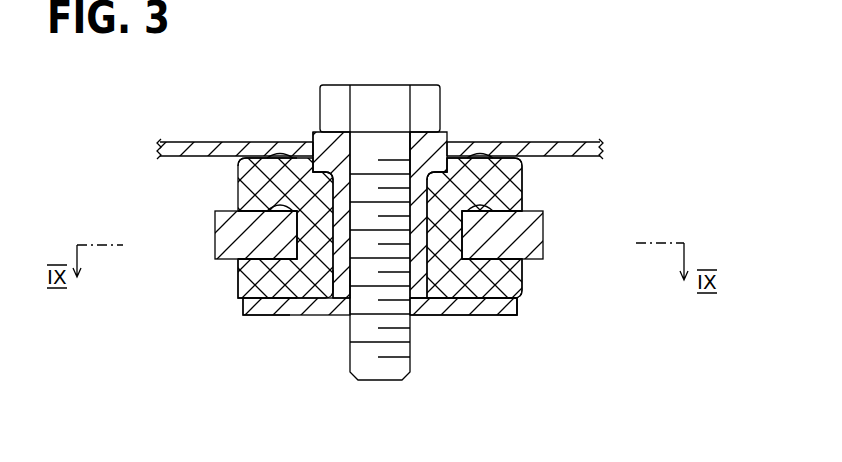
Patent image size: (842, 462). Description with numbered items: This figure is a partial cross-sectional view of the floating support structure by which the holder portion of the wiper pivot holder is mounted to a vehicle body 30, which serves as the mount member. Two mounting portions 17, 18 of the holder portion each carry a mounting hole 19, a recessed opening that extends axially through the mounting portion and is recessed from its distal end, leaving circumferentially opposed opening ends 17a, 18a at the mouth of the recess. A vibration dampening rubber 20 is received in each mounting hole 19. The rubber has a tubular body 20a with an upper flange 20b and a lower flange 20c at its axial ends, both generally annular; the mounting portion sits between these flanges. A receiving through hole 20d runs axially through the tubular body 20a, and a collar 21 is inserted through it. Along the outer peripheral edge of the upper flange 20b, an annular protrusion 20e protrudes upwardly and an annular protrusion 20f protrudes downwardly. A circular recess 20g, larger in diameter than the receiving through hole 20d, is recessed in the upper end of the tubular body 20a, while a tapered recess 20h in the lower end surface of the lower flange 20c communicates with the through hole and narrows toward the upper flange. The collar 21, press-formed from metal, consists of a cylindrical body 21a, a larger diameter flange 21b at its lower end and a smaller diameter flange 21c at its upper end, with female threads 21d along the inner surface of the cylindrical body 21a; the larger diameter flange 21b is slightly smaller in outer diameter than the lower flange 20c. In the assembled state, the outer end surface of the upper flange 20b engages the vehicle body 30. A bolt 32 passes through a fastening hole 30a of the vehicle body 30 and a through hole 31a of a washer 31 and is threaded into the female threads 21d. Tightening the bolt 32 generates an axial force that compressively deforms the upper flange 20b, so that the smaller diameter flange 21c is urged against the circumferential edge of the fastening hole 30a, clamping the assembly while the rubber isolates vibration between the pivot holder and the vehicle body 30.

The mounting portion 17 is at (445, 226).
The mounting portion 18 is at (549, 219).
The opening end 17a is at (389, 266).
The opening end 18a is at (220, 229).
The mounting hole 19 is at (265, 300).
The vibration dampening rubber 20 is at (376, 226).
The tubular body 20a is at (534, 256).
The upper flange 20b is at (522, 184).
The lower flange 20c is at (238, 270).
The receiving through hole 20d is at (446, 172).
The annular protrusion 20e is at (257, 164).
The annular protrusion 20f is at (239, 205).
The circular recess 20g is at (449, 162).
The tapered recess 20h is at (434, 300).
The collar 21 is at (394, 242).
The cylindrical body 21a is at (471, 316).
The larger diameter flange 21b is at (498, 316).
The smaller diameter flange 21c is at (323, 158).
The female threads 21d is at (362, 298).
The vehicle body 30 is at (583, 152).
The fastening hole 30a is at (349, 142).
The washer 31 is at (414, 208).
The through hole 31a is at (410, 140).
The bolt 32 is at (325, 86).